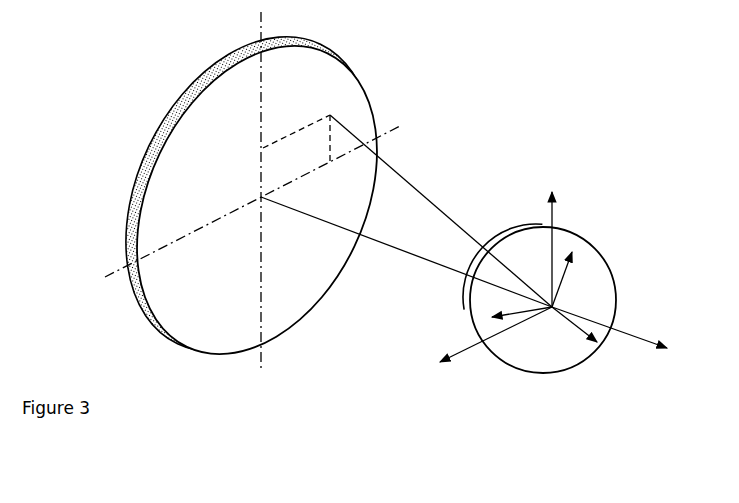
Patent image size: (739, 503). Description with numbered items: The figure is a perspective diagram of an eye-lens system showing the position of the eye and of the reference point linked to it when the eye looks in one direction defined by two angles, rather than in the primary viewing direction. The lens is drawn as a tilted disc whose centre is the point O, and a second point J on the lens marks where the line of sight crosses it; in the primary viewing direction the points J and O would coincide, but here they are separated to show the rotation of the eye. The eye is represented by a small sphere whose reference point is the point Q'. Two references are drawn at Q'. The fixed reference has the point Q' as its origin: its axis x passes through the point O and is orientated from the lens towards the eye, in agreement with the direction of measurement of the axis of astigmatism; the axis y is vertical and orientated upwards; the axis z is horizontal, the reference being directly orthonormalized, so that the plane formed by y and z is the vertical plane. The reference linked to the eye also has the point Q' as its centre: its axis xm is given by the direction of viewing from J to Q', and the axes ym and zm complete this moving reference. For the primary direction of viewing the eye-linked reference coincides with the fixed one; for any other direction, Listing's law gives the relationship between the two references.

The point O is at (314, 196).
The point J is at (407, 199).
The point Q' is at (539, 298).
The x axis x is at (620, 339).
The y axis y is at (555, 235).
The z axis z is at (480, 347).
The xm axis xm is at (574, 330).
The ym axis ym is at (574, 279).
The zm axis zm is at (519, 306).